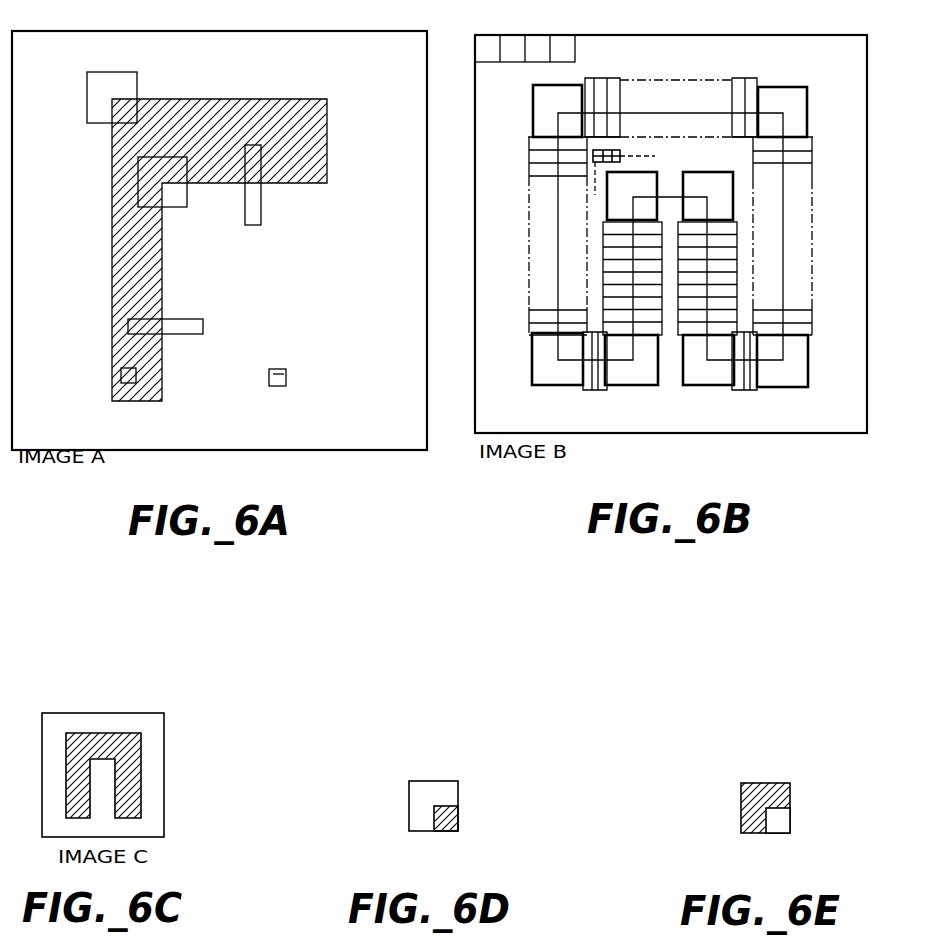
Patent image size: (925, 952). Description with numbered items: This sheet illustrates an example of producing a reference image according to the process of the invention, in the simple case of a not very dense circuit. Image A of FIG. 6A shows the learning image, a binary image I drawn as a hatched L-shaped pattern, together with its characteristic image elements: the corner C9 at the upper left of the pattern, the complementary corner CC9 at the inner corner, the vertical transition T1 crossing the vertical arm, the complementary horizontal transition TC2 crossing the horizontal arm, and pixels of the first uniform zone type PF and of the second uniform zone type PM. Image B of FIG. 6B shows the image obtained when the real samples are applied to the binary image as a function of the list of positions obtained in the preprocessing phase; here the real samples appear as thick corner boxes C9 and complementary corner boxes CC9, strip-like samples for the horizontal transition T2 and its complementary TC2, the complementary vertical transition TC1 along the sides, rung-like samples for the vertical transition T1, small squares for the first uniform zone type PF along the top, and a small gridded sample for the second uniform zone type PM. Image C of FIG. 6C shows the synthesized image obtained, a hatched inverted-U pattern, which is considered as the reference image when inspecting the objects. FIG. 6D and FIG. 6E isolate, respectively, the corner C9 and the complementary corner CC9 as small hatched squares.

In FIG. 6A, the binary image I is at (106, 269).
In FIG. 6A, the corner C9 is at (94, 104).
In FIG. 6B, the corner C9 is at (540, 115).
In FIG. 6D, the corner C9 is at (455, 832).
In FIG. 6A, the complementary corner CC9 is at (183, 208).
In FIG. 6B, the complementary corner CC9 is at (650, 208).
In FIG. 6E, the complementary corner CC9 is at (780, 828).
In FIG. 6B, the complementary vertical transition TC1 is at (537, 144).
In FIG. 6A, the complementary horizontal transition TC2 is at (256, 226).
In FIG. 6B, the complementary horizontal transition TC2 is at (598, 390).
In FIG. 6A, the vertical transition T1 is at (203, 326).
In FIG. 6B, the vertical transition T1 is at (653, 315).
In FIG. 6B, the horizontal transition T2 is at (615, 85).
In FIG. 6A, the first uniform zone type pixels PF is at (283, 371).
In FIG. 6B, the first uniform zone type pixels PF is at (483, 41).
In FIG. 6A, the second uniform zone type pixels PM is at (128, 383).
In FIG. 6B, the second uniform zone type pixels PM is at (595, 157).